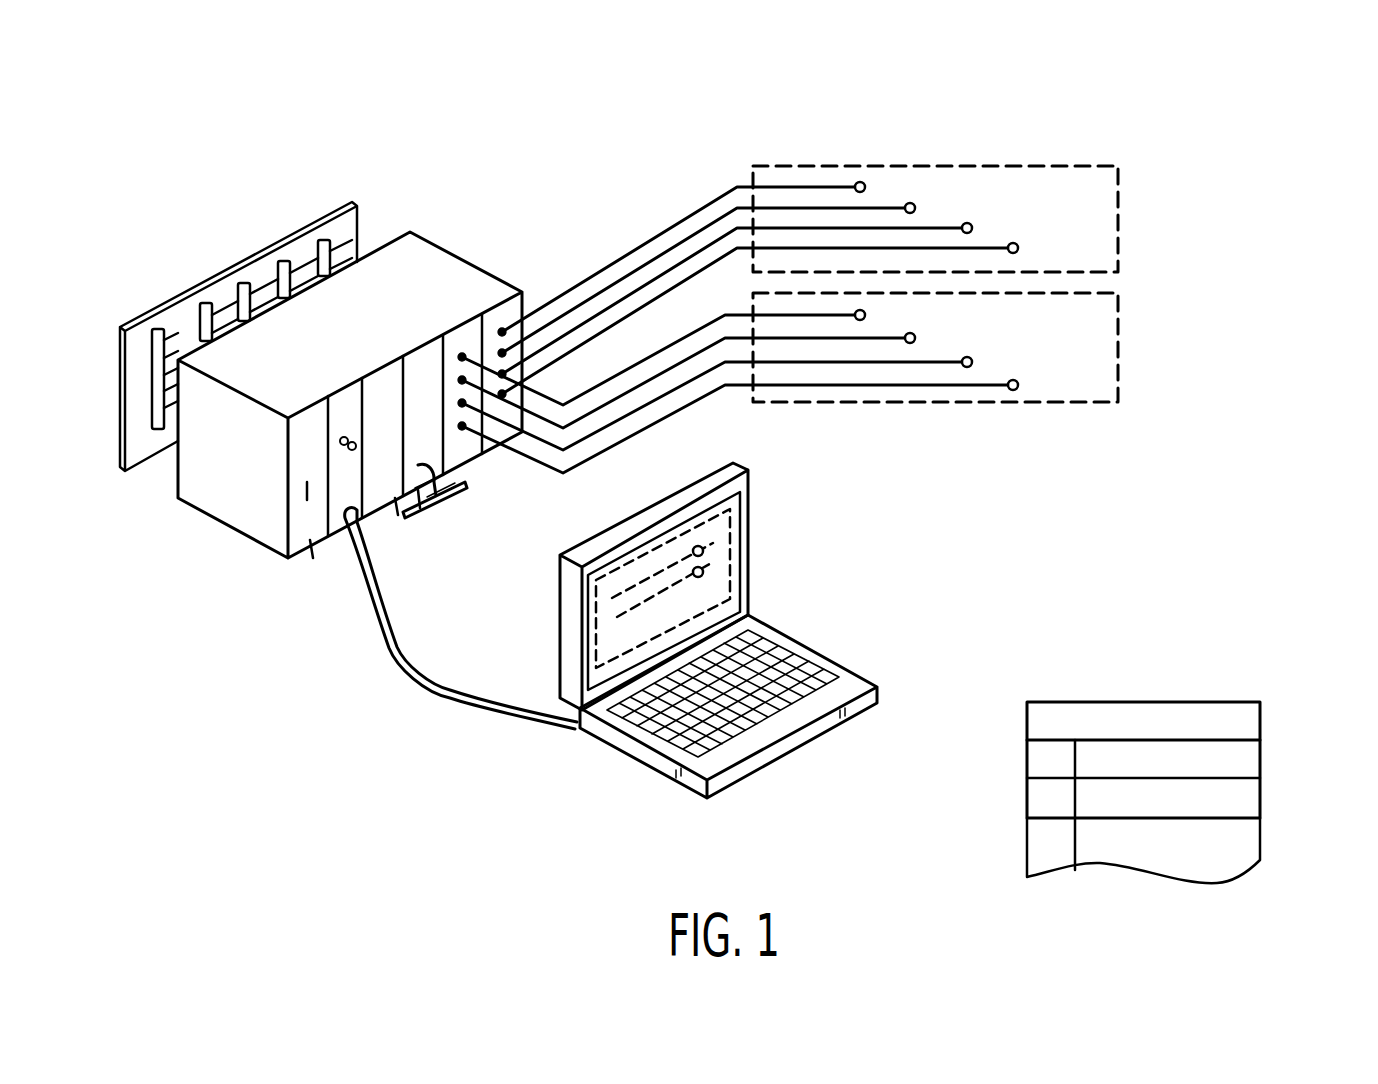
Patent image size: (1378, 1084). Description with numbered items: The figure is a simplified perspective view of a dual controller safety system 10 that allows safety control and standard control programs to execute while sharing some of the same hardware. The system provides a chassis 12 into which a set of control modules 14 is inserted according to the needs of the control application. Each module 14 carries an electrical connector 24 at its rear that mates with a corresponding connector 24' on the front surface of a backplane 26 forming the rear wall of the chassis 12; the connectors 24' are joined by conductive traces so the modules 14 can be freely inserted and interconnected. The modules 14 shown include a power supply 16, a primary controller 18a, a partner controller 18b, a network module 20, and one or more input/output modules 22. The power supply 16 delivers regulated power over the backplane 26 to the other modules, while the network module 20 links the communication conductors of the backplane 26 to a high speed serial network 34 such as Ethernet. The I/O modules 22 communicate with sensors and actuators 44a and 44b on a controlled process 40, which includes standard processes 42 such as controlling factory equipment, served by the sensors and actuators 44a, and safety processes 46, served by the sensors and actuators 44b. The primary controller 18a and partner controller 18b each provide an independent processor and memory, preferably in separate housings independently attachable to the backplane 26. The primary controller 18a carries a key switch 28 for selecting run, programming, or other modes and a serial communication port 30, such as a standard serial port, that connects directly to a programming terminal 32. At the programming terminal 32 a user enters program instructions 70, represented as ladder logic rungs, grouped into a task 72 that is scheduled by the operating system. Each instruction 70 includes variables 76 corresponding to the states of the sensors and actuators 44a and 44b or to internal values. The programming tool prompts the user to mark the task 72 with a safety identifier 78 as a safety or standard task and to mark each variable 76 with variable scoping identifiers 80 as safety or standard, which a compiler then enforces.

The dual controller safety system 10 is at (80, 272).
The chassis 12 is at (217, 503).
The control modules 14 is at (418, 505).
The power supply 16 is at (307, 495).
The primary controller 18a is at (346, 388).
The partner controller 18b is at (378, 380).
The network module 20 is at (462, 320).
The input/output (I/O) modules 22 is at (500, 294).
The electrical connector 24 is at (233, 304).
The connector 24' is at (215, 311).
The backplane 26 is at (112, 387).
The key switch 28 is at (346, 432).
The serial communication port 30 is at (357, 522).
The programming terminal 32 is at (608, 765).
The high speed serial network 34 is at (458, 492).
The controlled process 40 is at (1074, 122).
The standard processes 42 is at (1120, 215).
The sensors and actuators 44a is at (866, 188).
The sensors and actuators 44b is at (866, 316).
The safety processes 46 is at (1120, 345).
The program instructions 70 is at (576, 618).
The task 72 is at (582, 662).
The variables 76 is at (692, 570).
The safety identifier 78 is at (1258, 718).
The variable scoping identifiers 80 is at (1252, 800).